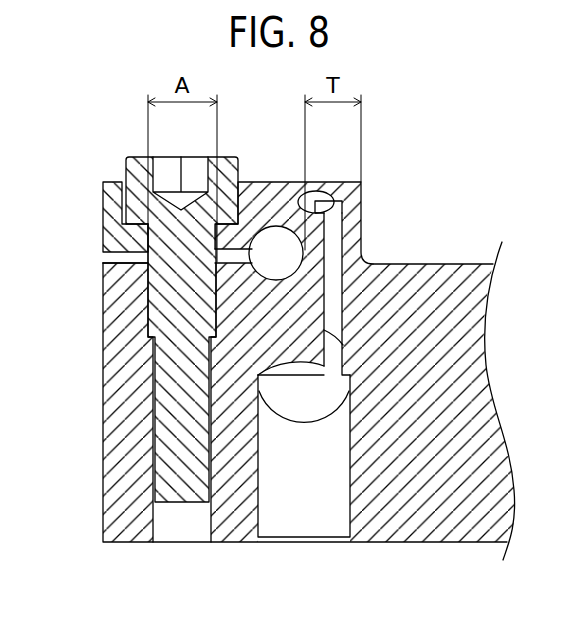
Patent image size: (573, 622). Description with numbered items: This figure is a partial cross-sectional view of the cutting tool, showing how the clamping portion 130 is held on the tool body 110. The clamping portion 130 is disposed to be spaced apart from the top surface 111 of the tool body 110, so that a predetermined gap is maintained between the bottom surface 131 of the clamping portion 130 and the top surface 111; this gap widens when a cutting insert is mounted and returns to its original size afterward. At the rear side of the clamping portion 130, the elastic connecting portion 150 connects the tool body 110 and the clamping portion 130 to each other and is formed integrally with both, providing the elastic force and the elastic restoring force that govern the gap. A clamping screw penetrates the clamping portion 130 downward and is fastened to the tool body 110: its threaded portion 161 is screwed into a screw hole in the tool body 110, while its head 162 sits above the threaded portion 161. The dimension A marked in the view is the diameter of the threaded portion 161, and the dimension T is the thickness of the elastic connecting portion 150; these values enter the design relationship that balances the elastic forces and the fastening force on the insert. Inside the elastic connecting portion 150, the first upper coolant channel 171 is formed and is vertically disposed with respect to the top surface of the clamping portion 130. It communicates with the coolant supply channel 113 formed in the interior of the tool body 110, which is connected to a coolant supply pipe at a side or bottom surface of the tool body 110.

The tool body 110 is at (466, 272).
The top surface 111 is at (125, 265).
The coolant supply channel 113 is at (312, 497).
The clamping portion 130 is at (271, 195).
The bottom surface 131 is at (122, 257).
The elastic connecting portion 150 is at (338, 259).
The threaded portion 161 is at (160, 413).
The head 162 is at (142, 190).
The first upper coolant channel 171 is at (352, 236).